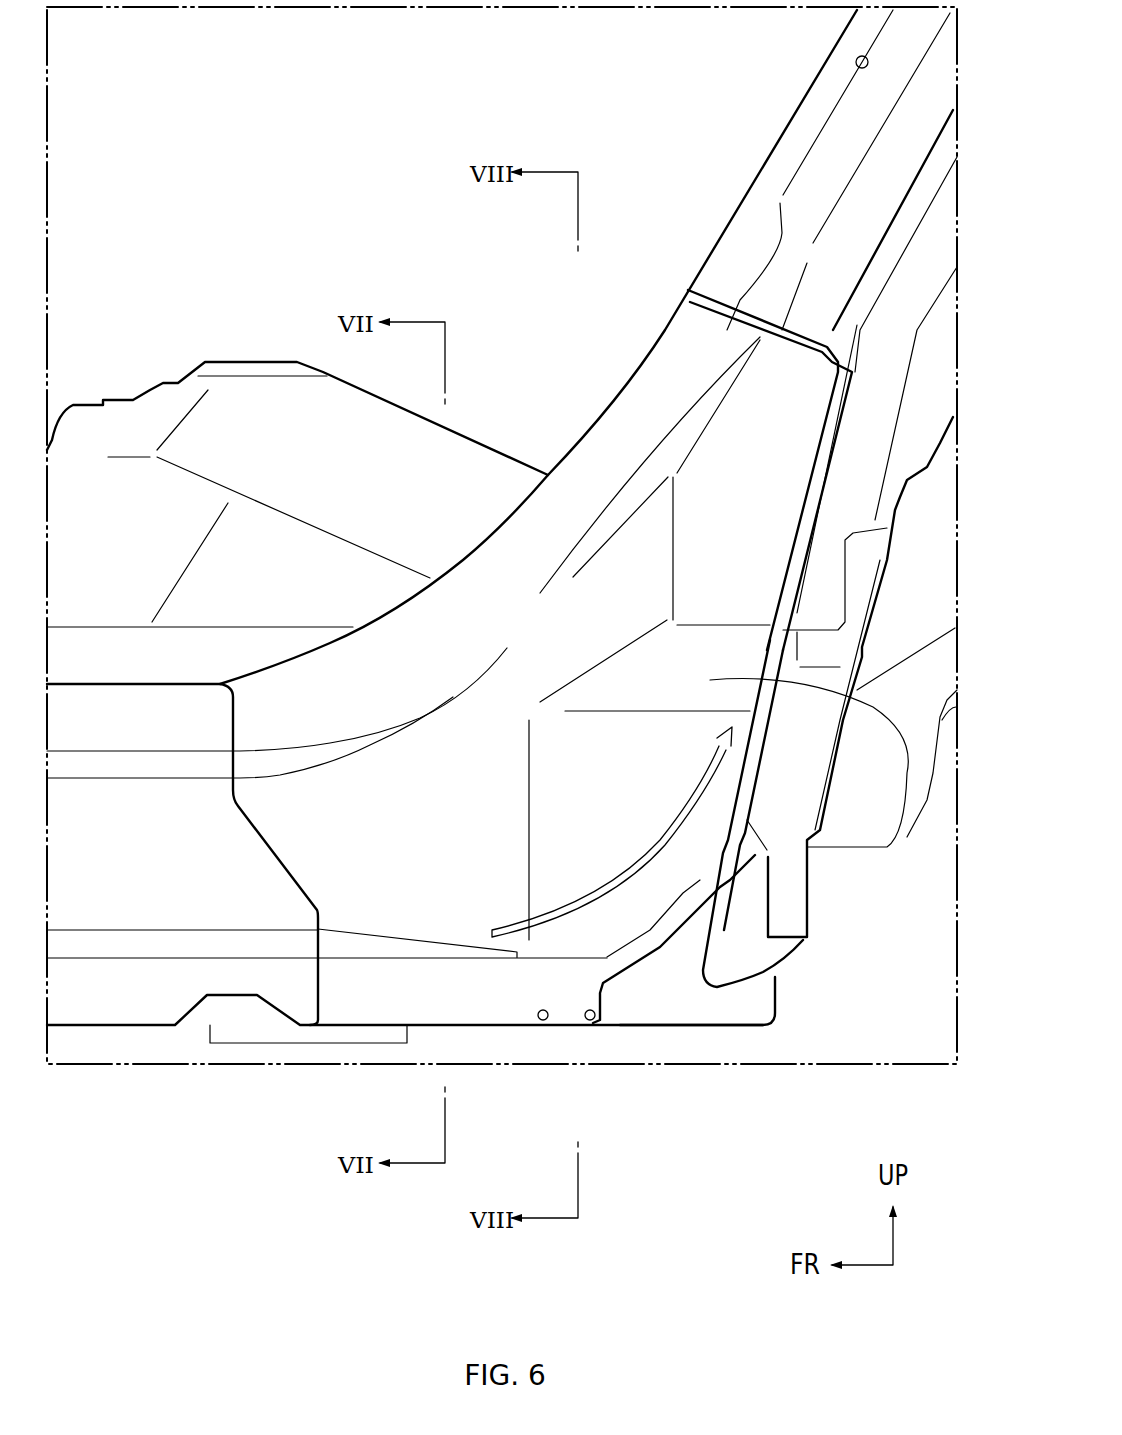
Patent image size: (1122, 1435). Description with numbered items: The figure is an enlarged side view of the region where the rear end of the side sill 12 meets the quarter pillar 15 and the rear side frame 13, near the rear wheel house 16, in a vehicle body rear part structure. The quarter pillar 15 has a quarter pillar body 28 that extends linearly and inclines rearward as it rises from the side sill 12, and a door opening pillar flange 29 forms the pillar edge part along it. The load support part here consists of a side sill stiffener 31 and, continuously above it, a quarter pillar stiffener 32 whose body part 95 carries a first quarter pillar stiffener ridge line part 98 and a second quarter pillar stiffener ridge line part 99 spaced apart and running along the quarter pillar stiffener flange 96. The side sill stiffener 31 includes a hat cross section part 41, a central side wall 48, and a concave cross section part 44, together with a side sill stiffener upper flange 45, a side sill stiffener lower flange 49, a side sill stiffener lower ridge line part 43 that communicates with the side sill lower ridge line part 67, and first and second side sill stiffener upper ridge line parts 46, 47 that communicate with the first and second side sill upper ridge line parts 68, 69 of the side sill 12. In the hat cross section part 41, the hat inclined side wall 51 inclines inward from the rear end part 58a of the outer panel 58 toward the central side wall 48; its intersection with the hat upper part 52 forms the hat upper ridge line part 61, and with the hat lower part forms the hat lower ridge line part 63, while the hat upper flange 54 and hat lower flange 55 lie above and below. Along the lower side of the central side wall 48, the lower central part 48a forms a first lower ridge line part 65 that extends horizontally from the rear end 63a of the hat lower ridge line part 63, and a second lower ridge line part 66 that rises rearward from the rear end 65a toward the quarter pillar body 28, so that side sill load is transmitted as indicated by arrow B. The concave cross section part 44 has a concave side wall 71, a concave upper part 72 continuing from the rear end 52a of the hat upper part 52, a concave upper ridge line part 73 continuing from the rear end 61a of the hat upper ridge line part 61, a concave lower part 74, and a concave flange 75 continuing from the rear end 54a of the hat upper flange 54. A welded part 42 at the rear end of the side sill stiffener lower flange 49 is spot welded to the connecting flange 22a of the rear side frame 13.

The side sill 12 is at (145, 665).
The rear side frame 13 is at (907, 837).
The quarter pillar 15 is at (750, 40).
The rear wheel house 16 is at (770, 757).
The connecting flange 22a is at (700, 1007).
The quarter pillar body 28 is at (790, 104).
The door opening pillar flange 29 is at (765, 177).
The side sill stiffener 31 is at (598, 390).
The quarter pillar stiffener 32 is at (790, 82).
The hat cross section part 41 is at (452, 902).
The welded part 42 is at (547, 1023).
The side sill stiffener lower ridge line part 43 is at (389, 955).
The concave cross section part 44 is at (780, 538).
The side sill stiffener upper flange 45 is at (470, 560).
The first side sill stiffener upper ridge line part 46 is at (390, 720).
The second side sill stiffener upper ridge line part 47 is at (685, 392).
The central side wall 48 is at (655, 840).
The lower central part 48a is at (657, 930).
The side sill stiffener lower flange 49 is at (478, 1032).
The hat inclined side wall 51 is at (463, 842).
The hat upper part 52 is at (313, 750).
The rear end of hat upper part 52a is at (513, 630).
The hat upper flange 54 is at (370, 668).
The rear end of hat upper flange 54a is at (525, 563).
The hat lower flange 55 is at (455, 1005).
The outer panel 58 is at (97, 908).
The rear end part of outer panel 58a is at (223, 905).
The hat upper ridge line part 61 is at (437, 697).
The rear end of hat upper ridge line part 61a is at (530, 640).
The hat lower ridge line part 63 is at (445, 950).
The rear end of hat lower ridge line part 63a is at (517, 957).
The first lower ridge line part 65 is at (560, 957).
The rear end of first lower ridge line part 65a is at (620, 1013).
The second lower ridge line part 66 is at (712, 903).
The side sill lower ridge line part 67 is at (70, 948).
The first side sill upper ridge line part 68 is at (118, 750).
The second side sill upper ridge line part 69 is at (80, 779).
The concave side wall 71 is at (752, 570).
The concave upper part 72 is at (708, 400).
The concave upper ridge line part 73 is at (673, 475).
The concave lower part 74 is at (893, 757).
The concave flange 75 is at (632, 410).
The quarter pillar stiffener body part 95 is at (907, 133).
The quarter pillar stiffener flange 96 is at (840, 62).
The first quarter pillar stiffener ridge line part 98 is at (858, 58).
The second quarter pillar stiffener ridge line part 99 is at (860, 147).
The arrow B is at (660, 840).